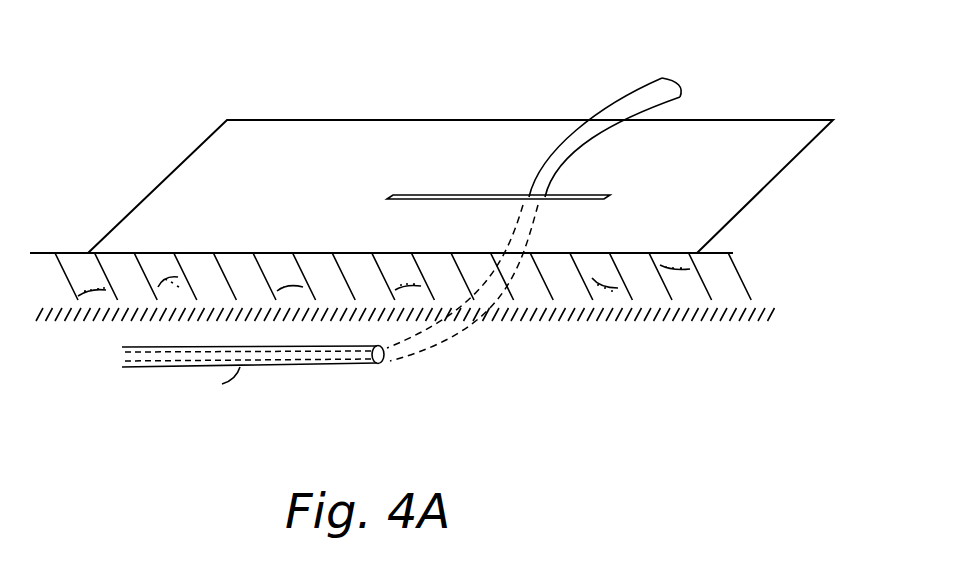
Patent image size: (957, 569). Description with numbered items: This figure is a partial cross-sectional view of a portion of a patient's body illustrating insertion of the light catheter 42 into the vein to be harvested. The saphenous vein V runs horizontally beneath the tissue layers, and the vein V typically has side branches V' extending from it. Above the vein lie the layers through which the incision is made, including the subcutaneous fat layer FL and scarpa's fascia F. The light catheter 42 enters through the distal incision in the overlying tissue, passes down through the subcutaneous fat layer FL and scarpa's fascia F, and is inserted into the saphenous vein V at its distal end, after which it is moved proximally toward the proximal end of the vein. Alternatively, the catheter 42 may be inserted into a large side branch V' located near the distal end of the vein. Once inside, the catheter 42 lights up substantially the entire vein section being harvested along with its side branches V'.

The light catheter 42 is at (643, 90).
The subcutaneous fat layer FL is at (697, 265).
The scarpa's fascia F is at (702, 310).
The saphenous vein V is at (253, 389).
The side branches V' is at (242, 406).